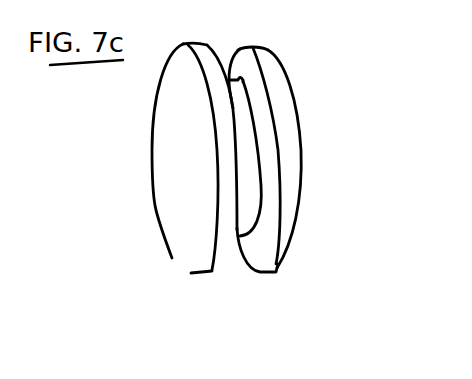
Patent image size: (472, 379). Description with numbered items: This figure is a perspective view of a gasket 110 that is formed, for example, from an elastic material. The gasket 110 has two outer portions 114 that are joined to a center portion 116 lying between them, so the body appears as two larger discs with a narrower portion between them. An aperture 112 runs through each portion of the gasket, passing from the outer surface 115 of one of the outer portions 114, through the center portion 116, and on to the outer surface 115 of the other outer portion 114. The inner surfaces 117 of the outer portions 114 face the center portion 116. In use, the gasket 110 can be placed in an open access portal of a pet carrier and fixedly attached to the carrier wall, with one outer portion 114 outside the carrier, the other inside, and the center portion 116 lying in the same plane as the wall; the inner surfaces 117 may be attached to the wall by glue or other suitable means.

The gasket 110 is at (223, 189).
The aperture 112 is at (150, 156).
The outer portions 114 is at (189, 281).
The outer surface 115 is at (183, 118).
The center portion 116 is at (236, 236).
The inner surfaces 117 is at (270, 221).